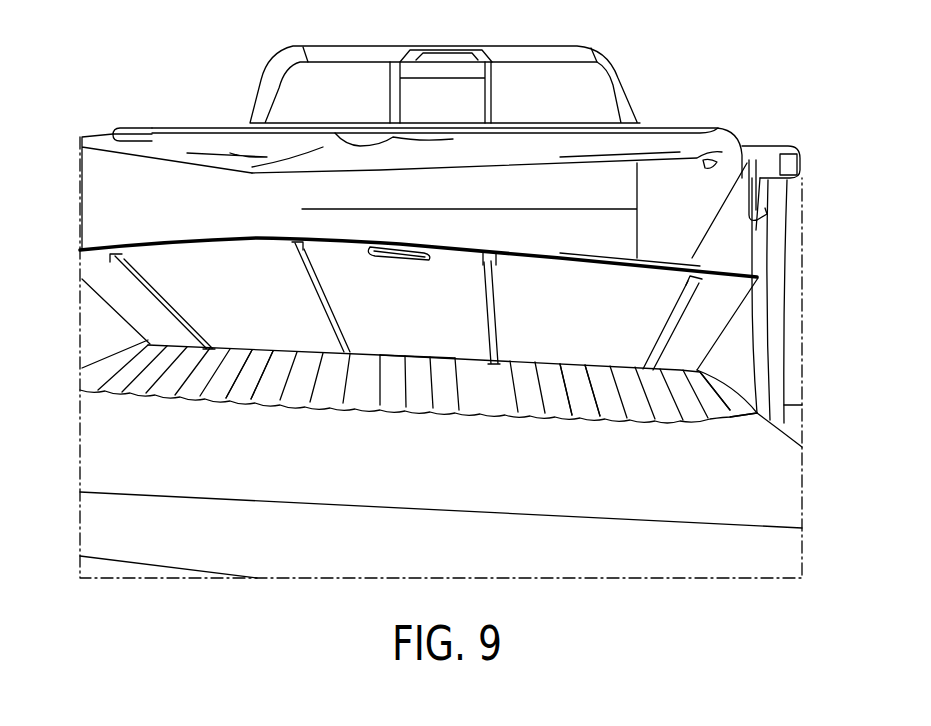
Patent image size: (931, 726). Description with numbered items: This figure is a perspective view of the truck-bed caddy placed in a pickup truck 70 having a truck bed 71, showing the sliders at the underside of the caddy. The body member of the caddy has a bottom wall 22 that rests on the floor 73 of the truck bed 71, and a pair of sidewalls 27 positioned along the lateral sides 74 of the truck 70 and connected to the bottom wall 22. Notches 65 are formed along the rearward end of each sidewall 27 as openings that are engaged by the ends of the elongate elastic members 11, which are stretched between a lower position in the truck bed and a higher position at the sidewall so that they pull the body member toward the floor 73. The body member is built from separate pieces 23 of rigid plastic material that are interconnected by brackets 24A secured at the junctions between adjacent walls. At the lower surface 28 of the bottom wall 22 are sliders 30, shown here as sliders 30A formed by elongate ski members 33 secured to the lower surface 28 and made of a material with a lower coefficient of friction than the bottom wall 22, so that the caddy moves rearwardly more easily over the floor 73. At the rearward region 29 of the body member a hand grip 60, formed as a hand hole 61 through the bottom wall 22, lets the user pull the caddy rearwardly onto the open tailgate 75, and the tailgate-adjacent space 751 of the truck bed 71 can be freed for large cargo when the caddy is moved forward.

The pickup truck 70 is at (334, 73).
The rearward region 29 is at (178, 242).
The sidewalls 27 is at (736, 196).
The notches 65 is at (757, 220).
The separate pieces 23 is at (747, 236).
The brackets 24A is at (753, 253).
The elongate elastic members 11 is at (748, 300).
The lateral sides 74 is at (775, 316).
The tailgate 75 is at (777, 477).
The truck bed 71 is at (645, 387).
The lower surface 28 is at (583, 345).
The sliders 30A is at (488, 320).
The bottom wall 22 is at (418, 332).
The tailgate-adjacent space 751 is at (268, 382).
The floor 73 is at (123, 380).
The ski members 33 is at (495, 250).
The sliders 30 is at (160, 317).
The hand grip 60 is at (423, 250).
The hand hole 61 is at (392, 252).